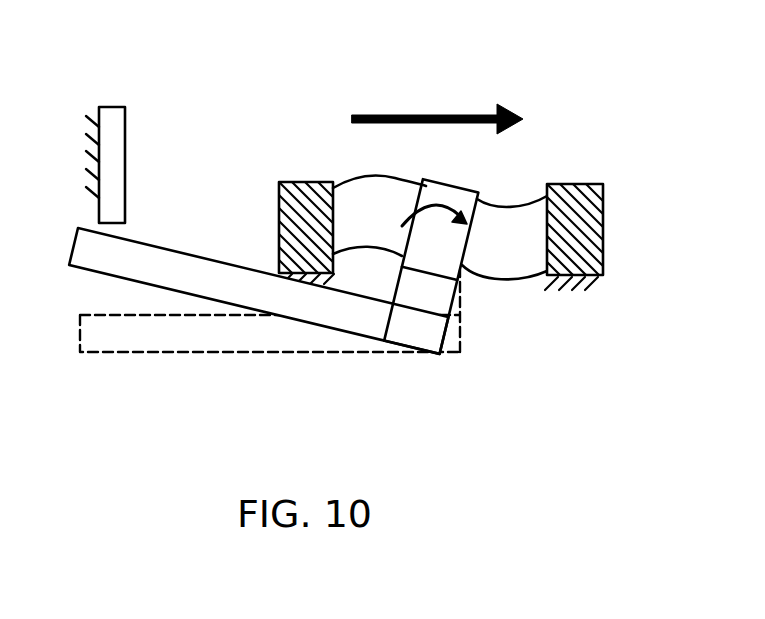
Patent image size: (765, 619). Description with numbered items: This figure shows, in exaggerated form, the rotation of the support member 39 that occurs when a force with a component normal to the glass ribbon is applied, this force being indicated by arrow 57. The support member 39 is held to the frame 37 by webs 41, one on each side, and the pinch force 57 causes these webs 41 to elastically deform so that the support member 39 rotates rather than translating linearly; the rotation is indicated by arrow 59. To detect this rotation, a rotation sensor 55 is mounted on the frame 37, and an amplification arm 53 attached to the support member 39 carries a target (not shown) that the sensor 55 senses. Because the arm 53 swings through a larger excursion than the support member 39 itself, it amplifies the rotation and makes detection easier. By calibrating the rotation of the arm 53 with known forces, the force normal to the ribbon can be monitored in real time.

The frame 37 is at (580, 183).
The support member 39 is at (438, 248).
The web 41 is at (373, 195).
The amplification arm for rotation sensing 53 is at (173, 264).
The rotation sensor 55 is at (117, 124).
The arrow illustrating pinch force 57 is at (457, 115).
The arrow illustrating rotation of support member 59 is at (447, 186).